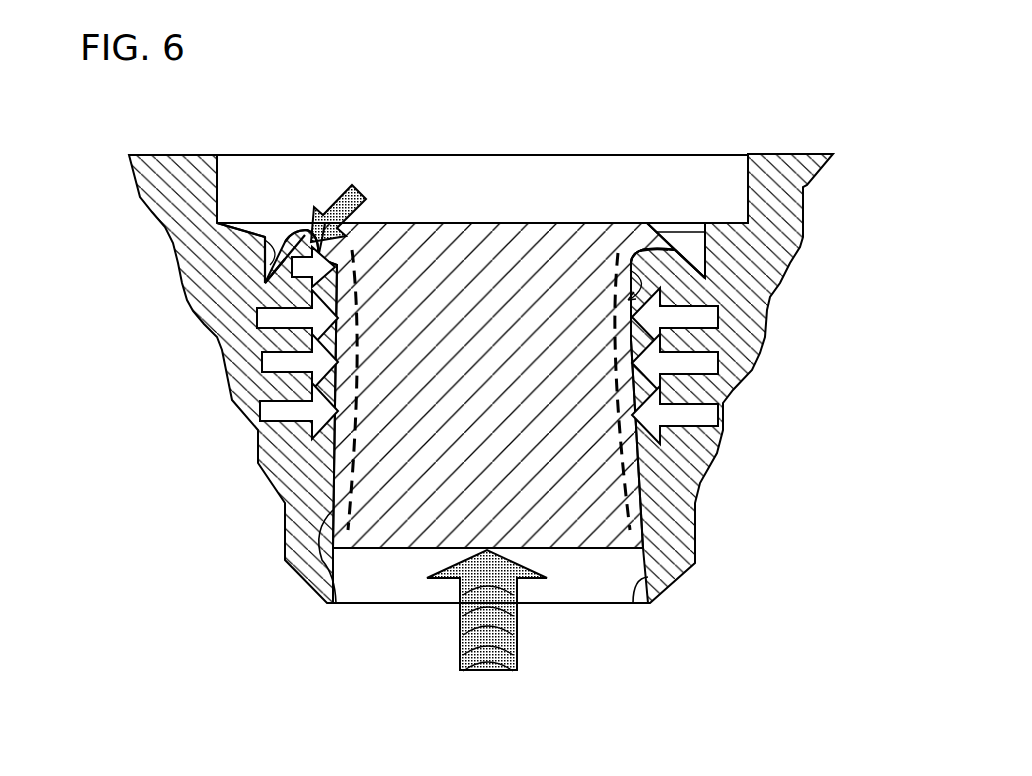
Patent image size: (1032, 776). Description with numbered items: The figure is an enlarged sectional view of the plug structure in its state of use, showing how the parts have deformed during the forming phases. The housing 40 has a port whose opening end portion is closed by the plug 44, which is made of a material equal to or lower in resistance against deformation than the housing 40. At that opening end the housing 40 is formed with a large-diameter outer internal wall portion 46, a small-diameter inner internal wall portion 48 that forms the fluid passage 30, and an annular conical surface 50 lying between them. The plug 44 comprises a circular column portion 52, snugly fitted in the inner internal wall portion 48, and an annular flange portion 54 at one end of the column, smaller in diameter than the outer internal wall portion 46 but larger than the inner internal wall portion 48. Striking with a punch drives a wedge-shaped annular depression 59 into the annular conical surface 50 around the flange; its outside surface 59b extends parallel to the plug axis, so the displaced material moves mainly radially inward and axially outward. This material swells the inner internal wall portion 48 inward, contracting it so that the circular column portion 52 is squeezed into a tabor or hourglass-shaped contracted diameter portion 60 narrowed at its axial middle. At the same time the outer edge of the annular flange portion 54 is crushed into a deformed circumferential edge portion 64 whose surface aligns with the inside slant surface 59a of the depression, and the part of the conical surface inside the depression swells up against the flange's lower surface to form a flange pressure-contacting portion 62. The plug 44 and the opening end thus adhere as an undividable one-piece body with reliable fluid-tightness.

The fluid passage 30 is at (647, 577).
The housing 40 is at (189, 168).
The plug 44 is at (458, 203).
The outer internal wall portion 46 is at (748, 185).
The inner internal wall portion 48 is at (340, 340).
The annular conical surface 50 is at (705, 222).
The circular column portion 52 is at (333, 582).
The annular flange portion 54 is at (596, 224).
The annular depression 59 is at (280, 247).
The inside slant surface 59a is at (690, 260).
The outside surface 59b is at (283, 252).
The contracted diameter portion 60 is at (585, 255).
The flange pressure-contacting portion 62 is at (300, 232).
The deformed circumferential edge portion 64 is at (650, 240).